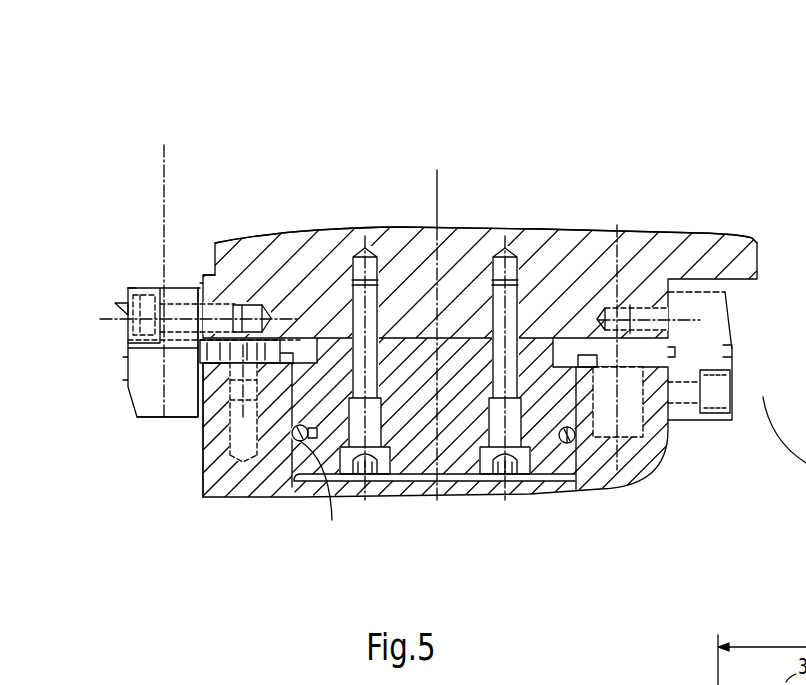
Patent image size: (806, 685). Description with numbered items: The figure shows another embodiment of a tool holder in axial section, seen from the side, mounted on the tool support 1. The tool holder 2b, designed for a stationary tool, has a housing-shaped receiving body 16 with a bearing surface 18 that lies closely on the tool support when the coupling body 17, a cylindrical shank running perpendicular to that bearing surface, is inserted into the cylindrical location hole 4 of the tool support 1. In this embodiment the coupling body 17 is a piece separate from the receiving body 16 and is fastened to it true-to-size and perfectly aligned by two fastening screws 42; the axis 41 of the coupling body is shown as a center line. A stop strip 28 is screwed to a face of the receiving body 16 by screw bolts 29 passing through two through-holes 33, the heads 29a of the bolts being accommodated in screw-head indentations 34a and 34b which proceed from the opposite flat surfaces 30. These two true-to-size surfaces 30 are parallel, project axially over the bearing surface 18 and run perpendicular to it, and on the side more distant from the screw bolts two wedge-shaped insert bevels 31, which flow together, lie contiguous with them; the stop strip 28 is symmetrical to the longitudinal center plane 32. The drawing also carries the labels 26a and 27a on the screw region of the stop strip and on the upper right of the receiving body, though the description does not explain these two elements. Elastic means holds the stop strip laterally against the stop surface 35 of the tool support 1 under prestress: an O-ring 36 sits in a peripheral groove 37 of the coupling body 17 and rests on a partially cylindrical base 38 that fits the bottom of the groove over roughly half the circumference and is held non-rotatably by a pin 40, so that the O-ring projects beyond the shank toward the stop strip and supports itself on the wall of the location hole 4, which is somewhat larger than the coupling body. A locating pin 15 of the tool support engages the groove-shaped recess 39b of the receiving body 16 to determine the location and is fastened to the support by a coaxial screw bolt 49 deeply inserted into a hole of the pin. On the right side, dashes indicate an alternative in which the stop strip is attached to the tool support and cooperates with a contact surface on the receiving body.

The tool support 1 is at (594, 473).
The tool holder 2b is at (500, 152).
The location hole 4 is at (290, 492).
The locating pin 15 is at (302, 378).
The receiving body 16 is at (635, 193).
The coupling body 17 is at (403, 462).
The bearing surface 18 is at (672, 345).
The screw tip 26a is at (270, 316).
The right adjusting screw 27a is at (672, 240).
The stop strip 28 is at (148, 365).
The screw bolt 29 is at (128, 312).
The screw bolt head 29a is at (148, 288).
The flat surface 30 is at (128, 348).
The insert bevel 31 is at (140, 415).
The longitudinal center plane 32 is at (165, 170).
The through-hole 33 is at (203, 275).
The screw-head indentation 34a is at (133, 290).
The screw-head indentation 34b is at (212, 277).
The stop surface 35 is at (200, 415).
The O-ring 36 is at (580, 447).
The peripheral groove 37 is at (560, 445).
The base 38 is at (317, 483).
The groove-shaped recess 39b is at (285, 345).
The pin 40 is at (333, 462).
The axis of the coupling body 41 is at (437, 200).
The fastening screw 42 is at (548, 240).
The coaxial screw bolt 49 is at (200, 405).